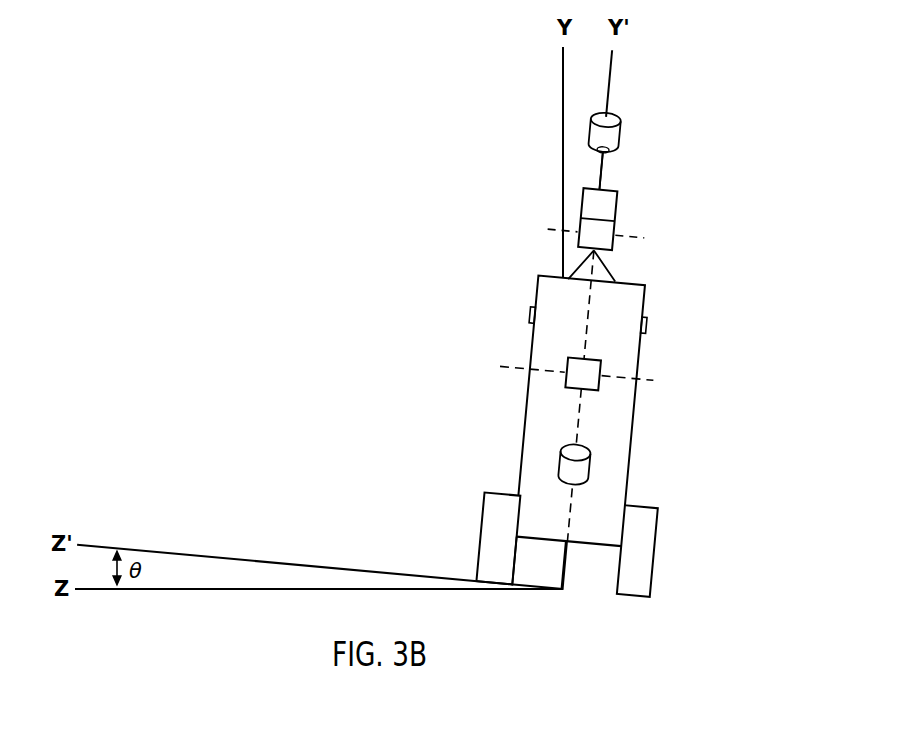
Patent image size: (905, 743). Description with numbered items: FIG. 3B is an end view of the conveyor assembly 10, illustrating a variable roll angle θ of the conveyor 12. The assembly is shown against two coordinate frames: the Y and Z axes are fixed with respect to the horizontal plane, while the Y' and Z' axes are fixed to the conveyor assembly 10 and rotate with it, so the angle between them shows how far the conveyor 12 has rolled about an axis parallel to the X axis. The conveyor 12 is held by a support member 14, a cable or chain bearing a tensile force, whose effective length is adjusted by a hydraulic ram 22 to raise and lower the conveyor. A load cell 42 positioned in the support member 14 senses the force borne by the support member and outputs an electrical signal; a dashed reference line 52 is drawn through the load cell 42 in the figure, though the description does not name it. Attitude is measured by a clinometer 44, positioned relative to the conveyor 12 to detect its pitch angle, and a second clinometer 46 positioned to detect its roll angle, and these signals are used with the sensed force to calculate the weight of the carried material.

The conveyor assembly 10 is at (497, 264).
The conveyor 12 is at (627, 352).
The support member 14 is at (600, 175).
The hydraulic ram 22 is at (625, 135).
The load cell 42 is at (615, 203).
The clinometer 44 is at (600, 385).
The clinometer 46 is at (586, 447).
The pivot axis 52 is at (612, 243).